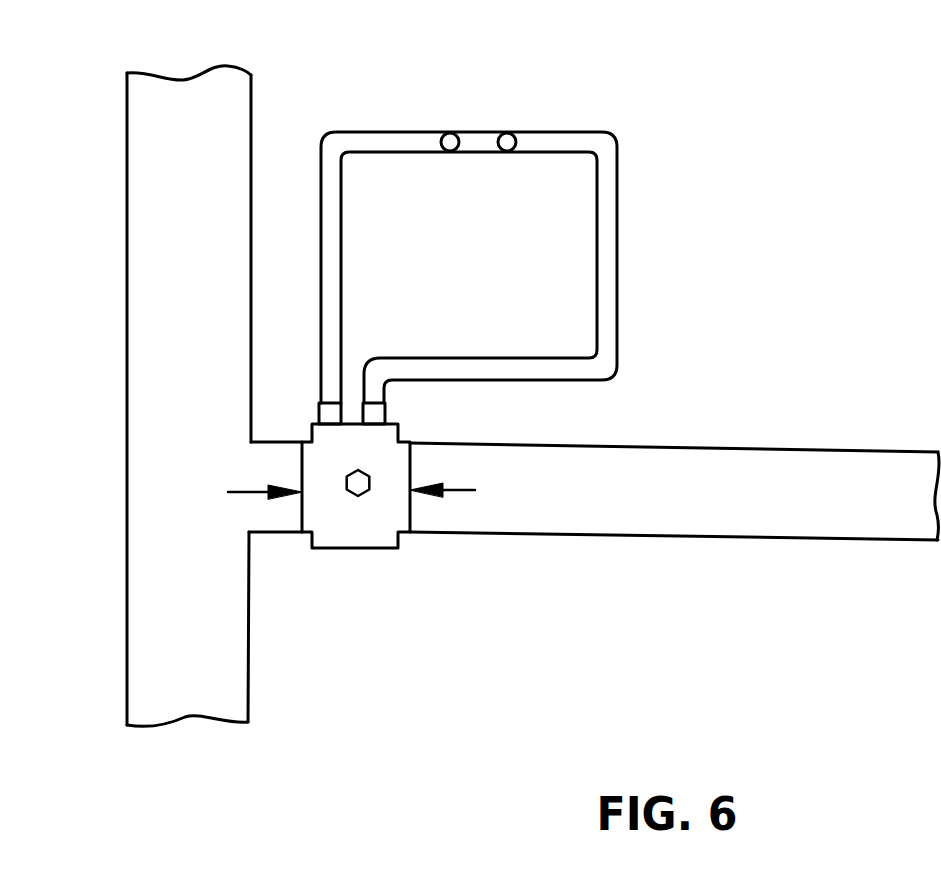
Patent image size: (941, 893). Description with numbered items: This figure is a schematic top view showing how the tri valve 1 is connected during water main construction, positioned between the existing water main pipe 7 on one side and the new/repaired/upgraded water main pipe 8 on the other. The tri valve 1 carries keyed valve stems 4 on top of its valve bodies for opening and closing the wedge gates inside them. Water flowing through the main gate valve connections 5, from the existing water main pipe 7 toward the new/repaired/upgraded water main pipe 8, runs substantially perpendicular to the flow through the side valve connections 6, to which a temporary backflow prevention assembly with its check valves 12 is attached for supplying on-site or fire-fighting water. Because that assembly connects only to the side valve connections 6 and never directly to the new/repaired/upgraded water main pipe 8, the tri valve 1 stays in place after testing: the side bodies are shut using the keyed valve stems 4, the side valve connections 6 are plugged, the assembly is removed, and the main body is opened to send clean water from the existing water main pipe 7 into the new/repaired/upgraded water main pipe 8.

The tri valve 1 is at (390, 558).
The keyed valve stem 4 is at (357, 487).
The main gate valve connection 5 is at (356, 497).
The side valve connection 6 is at (322, 403).
The existing water main pipe 7 is at (152, 592).
The new/repaired/upgraded water main pipe 8 is at (770, 463).
The check valve 12 is at (448, 133).